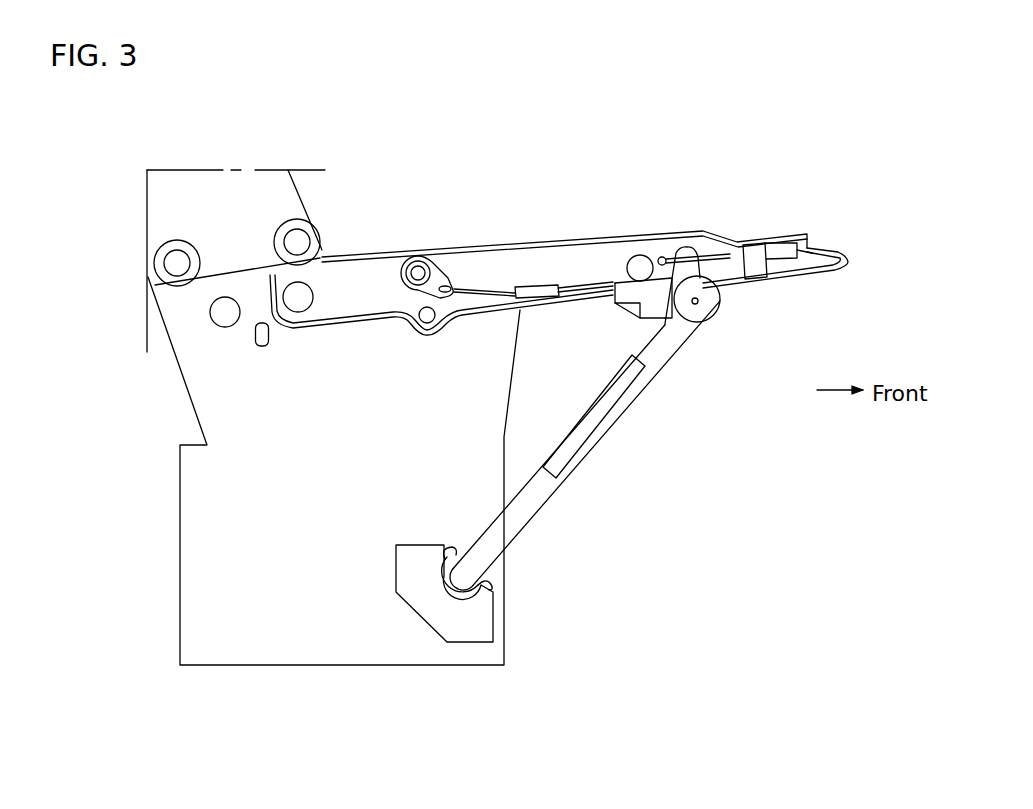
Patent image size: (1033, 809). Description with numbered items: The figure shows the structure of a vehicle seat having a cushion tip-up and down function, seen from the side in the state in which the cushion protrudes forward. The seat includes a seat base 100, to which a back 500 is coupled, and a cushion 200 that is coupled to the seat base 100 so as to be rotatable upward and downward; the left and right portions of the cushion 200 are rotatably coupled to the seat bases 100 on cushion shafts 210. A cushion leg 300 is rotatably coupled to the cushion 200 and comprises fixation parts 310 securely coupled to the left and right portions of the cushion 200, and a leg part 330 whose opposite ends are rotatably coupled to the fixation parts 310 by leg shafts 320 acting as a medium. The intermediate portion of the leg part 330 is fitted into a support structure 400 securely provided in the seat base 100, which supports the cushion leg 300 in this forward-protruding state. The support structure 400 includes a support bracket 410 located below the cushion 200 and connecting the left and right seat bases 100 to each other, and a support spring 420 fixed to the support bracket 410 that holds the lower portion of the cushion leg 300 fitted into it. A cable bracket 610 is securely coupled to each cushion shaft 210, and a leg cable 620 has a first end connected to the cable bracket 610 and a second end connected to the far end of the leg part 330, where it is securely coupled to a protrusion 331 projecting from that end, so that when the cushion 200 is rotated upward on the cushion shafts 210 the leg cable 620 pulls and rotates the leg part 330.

The seat base 100 is at (200, 565).
The cushion 200 is at (573, 263).
The cushion shaft 210 is at (416, 266).
The cushion leg 300 is at (617, 427).
The fixation part 310 is at (652, 293).
The leg shaft 320 is at (698, 304).
The leg part 330 is at (585, 443).
The protrusion 331 is at (687, 258).
The support structure 400 is at (500, 641).
The support bracket 410 is at (432, 608).
The support spring 420 is at (493, 582).
The back 500 is at (162, 210).
The cable bracket 610 is at (435, 278).
The leg cable 620 is at (483, 287).